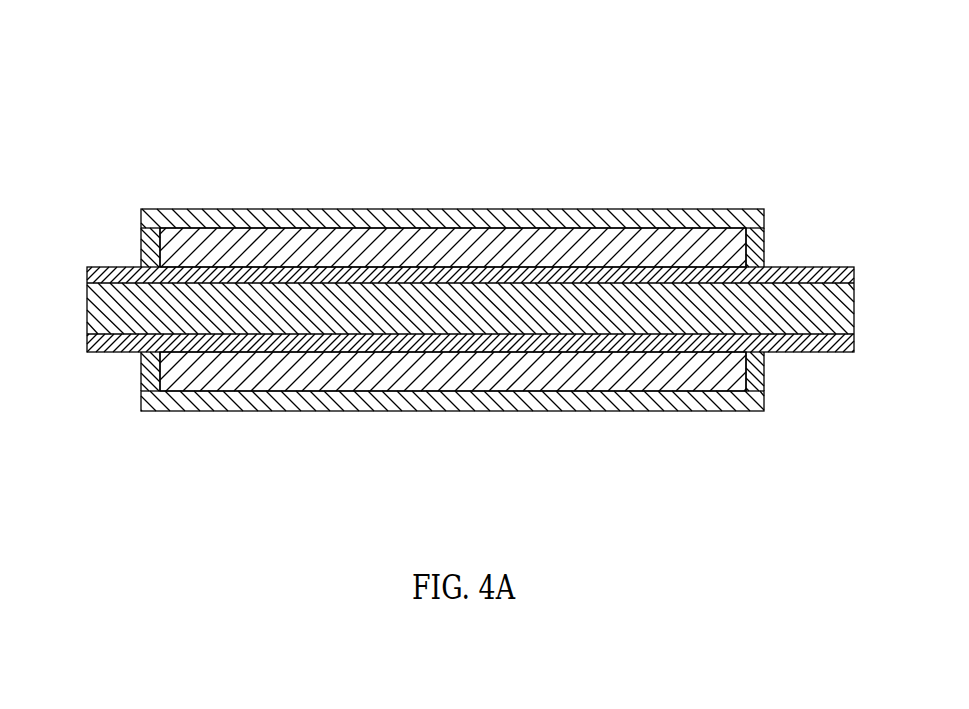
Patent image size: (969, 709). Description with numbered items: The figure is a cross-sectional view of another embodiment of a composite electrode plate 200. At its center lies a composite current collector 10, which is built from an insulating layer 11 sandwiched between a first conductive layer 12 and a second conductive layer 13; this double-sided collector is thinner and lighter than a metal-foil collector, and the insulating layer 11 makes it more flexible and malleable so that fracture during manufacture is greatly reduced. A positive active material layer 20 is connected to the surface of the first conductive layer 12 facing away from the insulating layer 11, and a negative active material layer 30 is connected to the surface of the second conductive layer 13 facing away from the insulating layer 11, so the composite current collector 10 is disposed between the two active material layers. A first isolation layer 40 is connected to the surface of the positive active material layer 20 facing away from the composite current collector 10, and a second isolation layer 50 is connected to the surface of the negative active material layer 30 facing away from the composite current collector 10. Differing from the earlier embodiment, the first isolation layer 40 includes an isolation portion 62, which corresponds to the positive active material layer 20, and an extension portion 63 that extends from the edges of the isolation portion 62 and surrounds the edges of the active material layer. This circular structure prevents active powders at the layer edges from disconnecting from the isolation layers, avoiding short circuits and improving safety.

The composite electrode plate 200 is at (261, 105).
The composite current collector 10 is at (362, 472).
The insulating layer 11 is at (287, 310).
The first conductive layer 12 is at (227, 281).
The second conductive layer 13 is at (353, 345).
The positive active material layer 20 is at (177, 251).
The negative active material layer 30 is at (628, 378).
The first isolation layer 40 is at (842, 177).
The isolation portion 62 is at (620, 215).
The extension portion 63 is at (755, 240).
The second isolation layer 50 is at (533, 391).